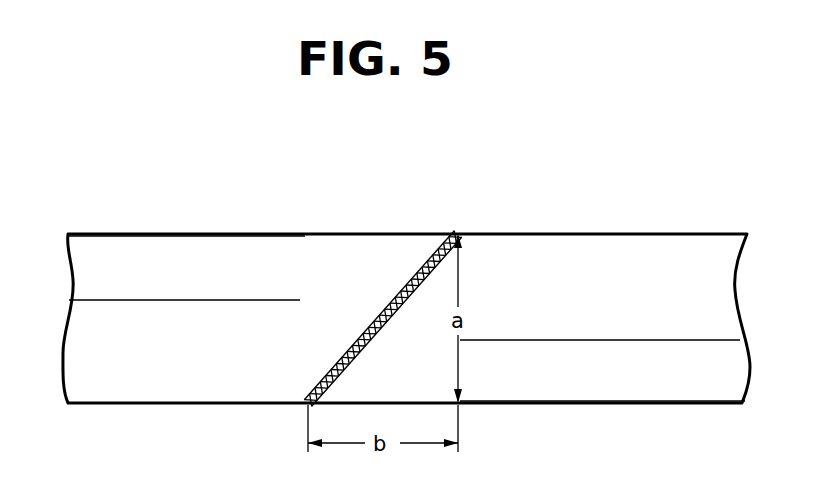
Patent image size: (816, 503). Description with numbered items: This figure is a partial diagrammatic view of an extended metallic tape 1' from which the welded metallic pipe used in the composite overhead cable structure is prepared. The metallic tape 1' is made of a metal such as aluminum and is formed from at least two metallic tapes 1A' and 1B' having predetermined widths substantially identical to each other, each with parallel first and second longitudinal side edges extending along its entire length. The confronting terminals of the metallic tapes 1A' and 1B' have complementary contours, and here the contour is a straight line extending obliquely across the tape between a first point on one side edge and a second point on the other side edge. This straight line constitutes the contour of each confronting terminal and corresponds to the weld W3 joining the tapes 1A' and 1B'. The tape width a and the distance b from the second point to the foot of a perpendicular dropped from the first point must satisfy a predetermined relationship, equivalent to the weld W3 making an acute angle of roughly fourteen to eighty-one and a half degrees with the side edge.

The metallic tape 1' is at (406, 276).
The metallic tape 1A' is at (187, 222).
The metallic tape 1B' is at (602, 411).
The weld W3 is at (392, 292).